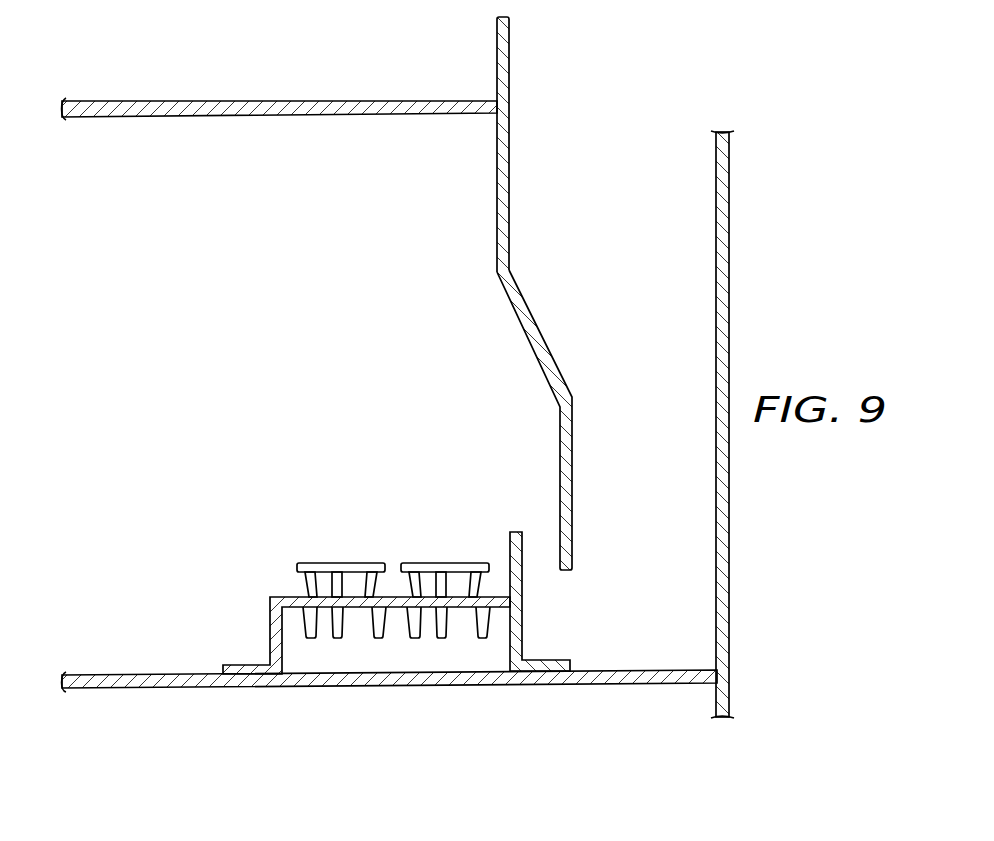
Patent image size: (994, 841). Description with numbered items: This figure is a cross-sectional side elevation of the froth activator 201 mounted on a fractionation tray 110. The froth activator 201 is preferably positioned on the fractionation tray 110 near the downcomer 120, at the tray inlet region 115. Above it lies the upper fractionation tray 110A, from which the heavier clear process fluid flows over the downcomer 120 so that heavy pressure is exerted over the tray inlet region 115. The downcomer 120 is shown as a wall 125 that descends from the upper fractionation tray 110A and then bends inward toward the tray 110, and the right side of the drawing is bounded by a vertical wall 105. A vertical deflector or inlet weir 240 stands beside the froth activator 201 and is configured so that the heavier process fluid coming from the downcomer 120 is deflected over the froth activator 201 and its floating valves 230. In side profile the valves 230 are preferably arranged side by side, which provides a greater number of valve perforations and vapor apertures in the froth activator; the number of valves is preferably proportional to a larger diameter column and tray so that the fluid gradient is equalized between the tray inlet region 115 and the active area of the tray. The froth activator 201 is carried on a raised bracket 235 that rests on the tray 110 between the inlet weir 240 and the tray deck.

The side wall 105 is at (726, 338).
The fractionation tray 110 is at (134, 675).
The upper fractionation tray 110A is at (267, 105).
The tray inlet region 115 is at (666, 655).
The downcomer 120 is at (530, 331).
The upper partition wall 125 is at (503, 68).
The froth activator 201 is at (252, 583).
The floating valves 230 is at (340, 562).
The mounting bracket 235 is at (268, 640).
The vertical deflector or inlet weir 240 is at (524, 586).